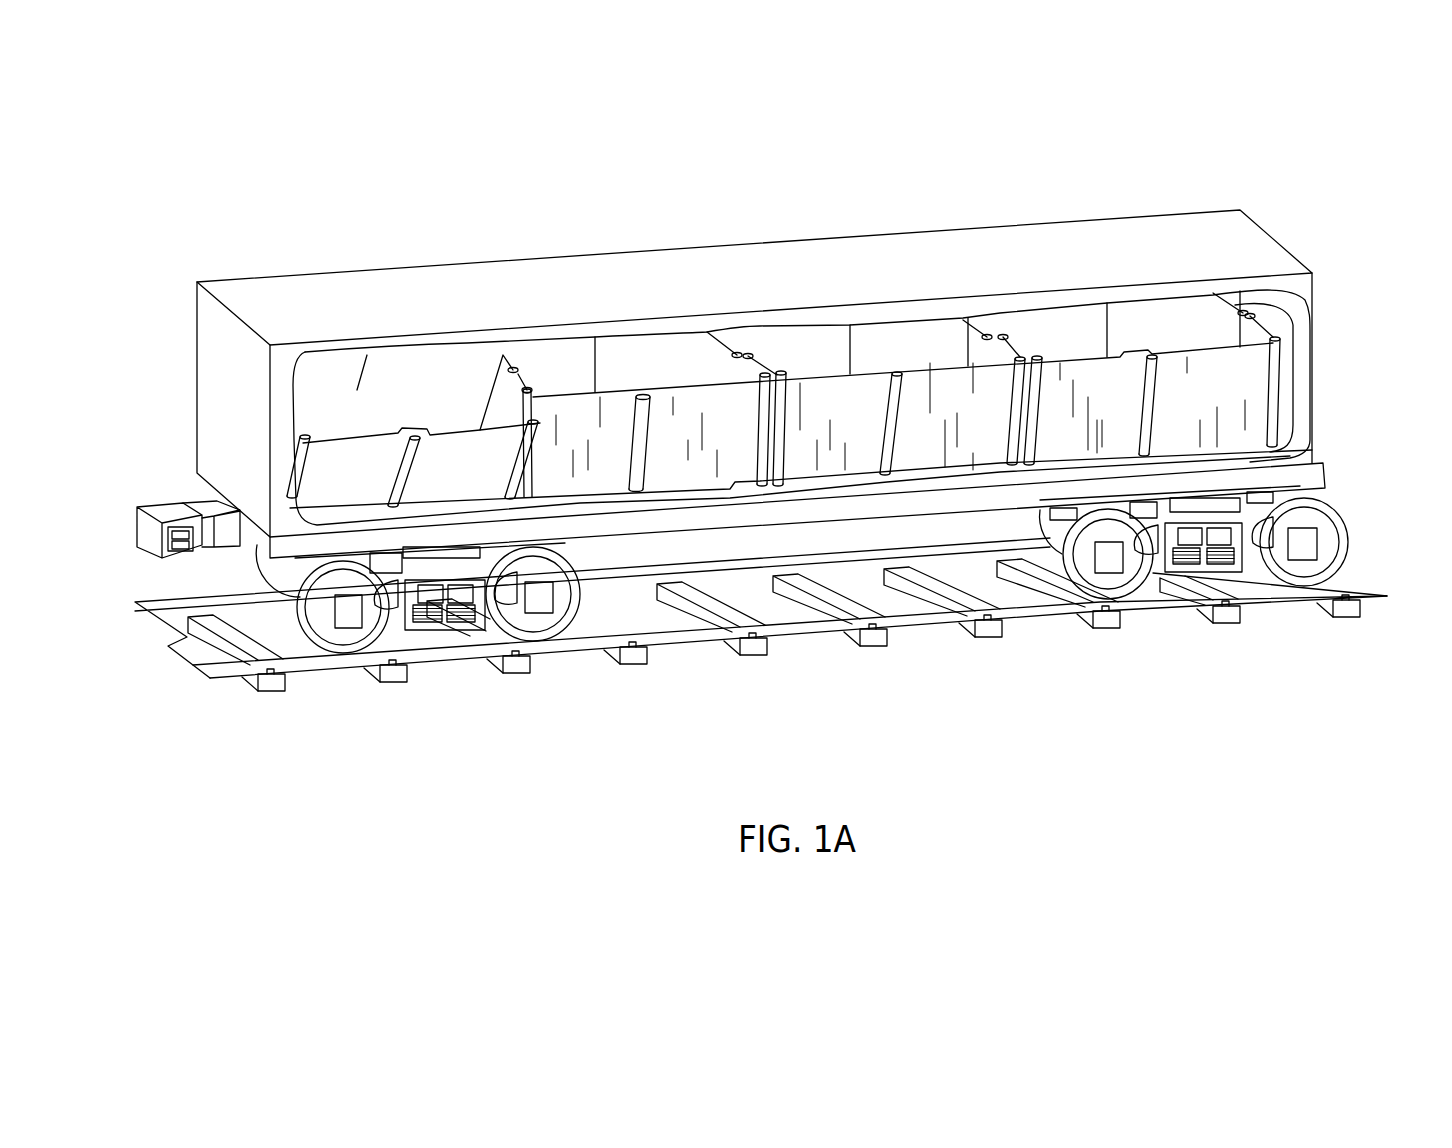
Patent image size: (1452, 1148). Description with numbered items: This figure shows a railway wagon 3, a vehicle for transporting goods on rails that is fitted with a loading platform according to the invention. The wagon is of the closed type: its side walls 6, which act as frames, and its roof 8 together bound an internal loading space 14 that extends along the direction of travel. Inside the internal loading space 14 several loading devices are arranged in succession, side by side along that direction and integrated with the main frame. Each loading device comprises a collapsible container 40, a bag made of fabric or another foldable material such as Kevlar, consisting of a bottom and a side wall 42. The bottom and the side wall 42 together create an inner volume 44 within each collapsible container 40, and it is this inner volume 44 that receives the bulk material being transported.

The railway wagon 3 is at (376, 270).
The side wall 6 is at (1305, 418).
The roof 8 is at (852, 257).
The internal loading space 14 is at (763, 328).
The collapsible container 40 is at (942, 362).
The side wall of the collapsible container 42 is at (572, 430).
The inner volume 44 is at (338, 390).